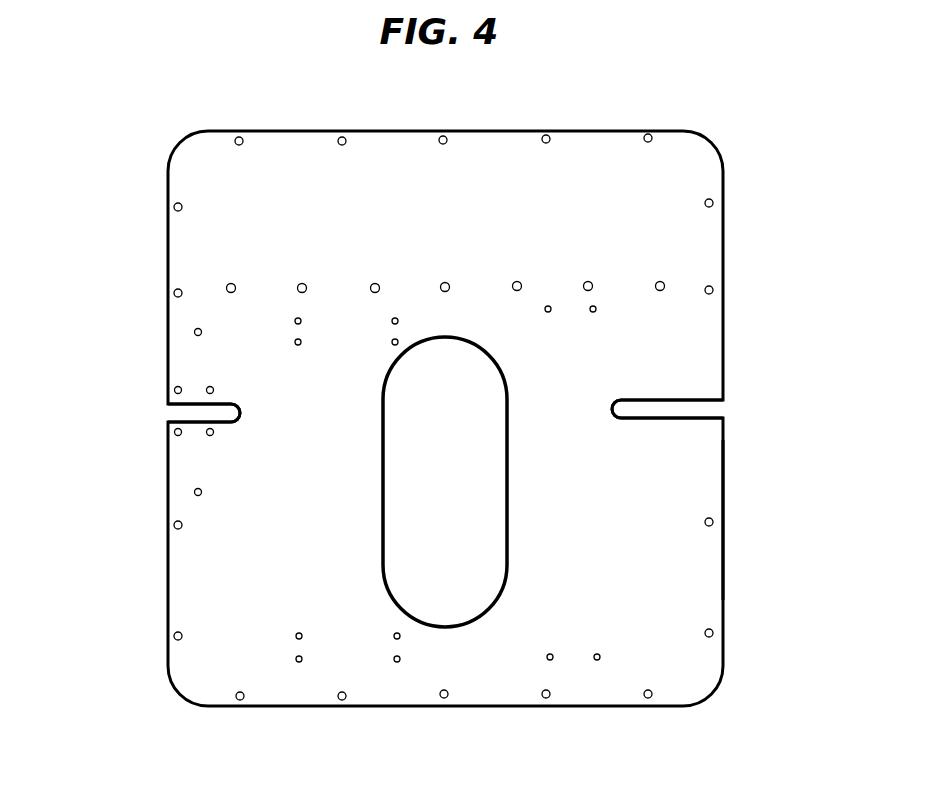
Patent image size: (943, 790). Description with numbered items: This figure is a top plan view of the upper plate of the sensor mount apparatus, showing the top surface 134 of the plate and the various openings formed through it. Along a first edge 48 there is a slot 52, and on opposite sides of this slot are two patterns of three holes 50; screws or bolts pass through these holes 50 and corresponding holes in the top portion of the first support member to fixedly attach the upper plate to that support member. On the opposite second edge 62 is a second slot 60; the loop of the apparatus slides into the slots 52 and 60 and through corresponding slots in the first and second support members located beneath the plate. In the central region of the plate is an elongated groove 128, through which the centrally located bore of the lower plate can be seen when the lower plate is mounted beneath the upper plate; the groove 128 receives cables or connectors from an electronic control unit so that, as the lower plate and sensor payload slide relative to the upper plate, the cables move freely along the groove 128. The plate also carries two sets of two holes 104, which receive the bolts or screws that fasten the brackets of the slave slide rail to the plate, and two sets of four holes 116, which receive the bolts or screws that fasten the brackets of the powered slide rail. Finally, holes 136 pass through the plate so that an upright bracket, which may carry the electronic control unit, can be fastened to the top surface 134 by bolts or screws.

The first edge 48 is at (163, 568).
The holes 50 is at (207, 388).
The slot 52 is at (163, 412).
The second slot 60 is at (731, 407).
The second edge 62 is at (730, 521).
The holes 104 is at (551, 311).
The holes 116 is at (392, 340).
The elongated groove 128 is at (445, 482).
The top surface 134 is at (629, 190).
The holes 136 is at (378, 284).